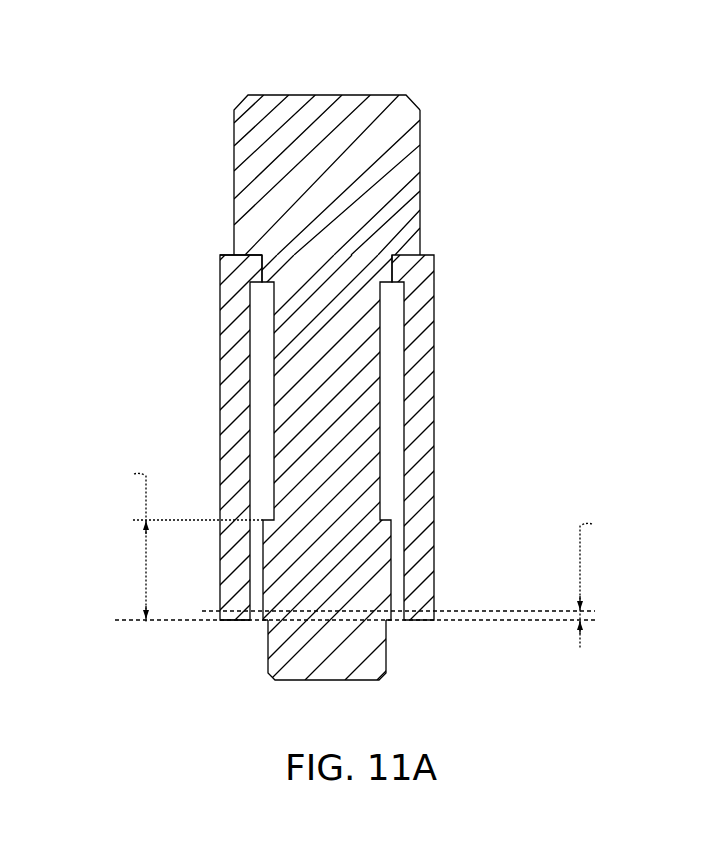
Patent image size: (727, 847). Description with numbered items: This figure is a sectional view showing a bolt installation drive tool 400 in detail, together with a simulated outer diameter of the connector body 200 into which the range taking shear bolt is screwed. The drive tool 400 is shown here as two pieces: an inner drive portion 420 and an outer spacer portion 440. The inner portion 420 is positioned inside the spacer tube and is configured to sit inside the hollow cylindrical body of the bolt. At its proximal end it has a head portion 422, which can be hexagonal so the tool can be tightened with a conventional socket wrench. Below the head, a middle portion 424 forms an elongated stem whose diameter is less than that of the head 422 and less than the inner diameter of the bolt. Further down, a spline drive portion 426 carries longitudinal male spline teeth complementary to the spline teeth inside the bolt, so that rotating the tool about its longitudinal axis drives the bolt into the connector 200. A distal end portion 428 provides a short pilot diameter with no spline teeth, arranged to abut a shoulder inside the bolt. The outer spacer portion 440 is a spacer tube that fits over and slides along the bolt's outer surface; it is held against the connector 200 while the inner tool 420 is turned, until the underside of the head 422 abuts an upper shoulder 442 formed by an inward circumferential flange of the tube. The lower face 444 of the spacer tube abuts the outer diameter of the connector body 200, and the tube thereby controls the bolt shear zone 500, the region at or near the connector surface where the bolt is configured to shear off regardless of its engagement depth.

The drive tool 400 is at (85, 117).
The inner drive portion 420 is at (413, 102).
The head portion 422 is at (420, 157).
The middle portion 424 is at (347, 383).
The spline drive portion 426 is at (161, 541).
The distal end portion 428 is at (355, 650).
The outer spacer portion 440 is at (220, 400).
The upper shoulder 442 is at (227, 252).
The lower face 444 is at (228, 620).
The connector body 200 is at (421, 621).
The bolt shear zone 500 is at (618, 579).